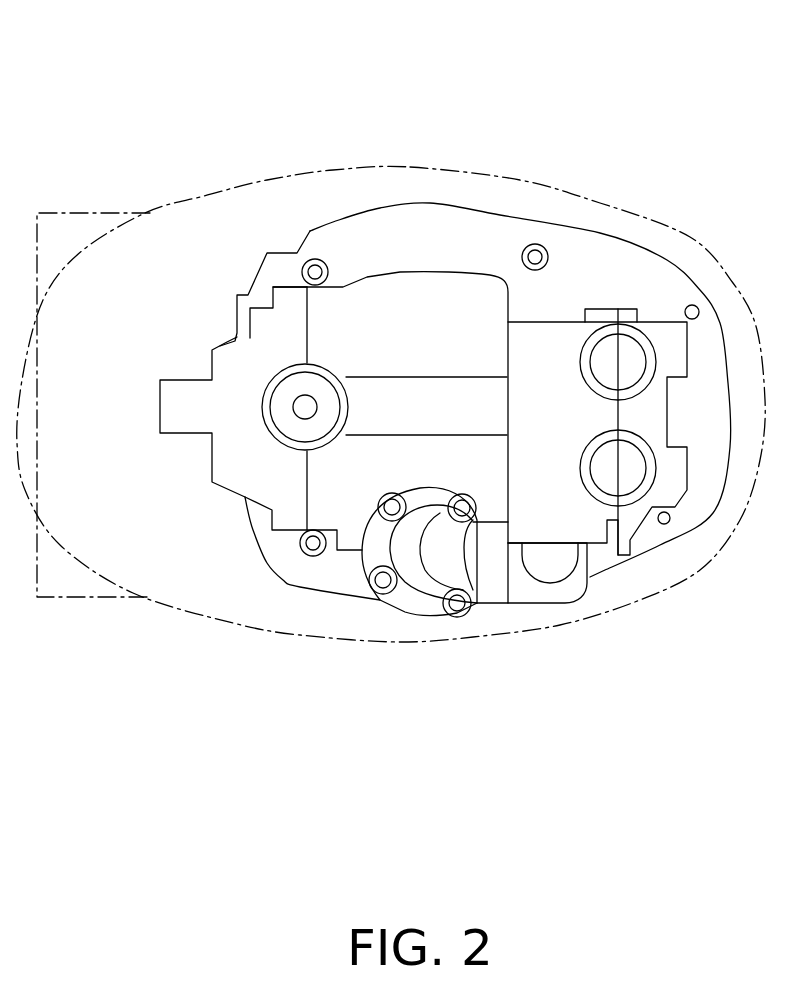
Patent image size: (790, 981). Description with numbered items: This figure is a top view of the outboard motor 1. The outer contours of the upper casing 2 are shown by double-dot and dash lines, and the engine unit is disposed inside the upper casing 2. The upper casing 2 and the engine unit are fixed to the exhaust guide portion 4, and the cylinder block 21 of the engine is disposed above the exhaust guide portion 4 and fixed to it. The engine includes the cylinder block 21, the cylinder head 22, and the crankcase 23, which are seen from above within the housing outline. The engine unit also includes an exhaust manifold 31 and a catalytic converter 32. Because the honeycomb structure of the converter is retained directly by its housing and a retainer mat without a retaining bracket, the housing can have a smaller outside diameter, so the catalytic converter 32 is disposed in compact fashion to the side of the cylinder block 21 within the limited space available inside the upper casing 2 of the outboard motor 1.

The outboard motor 1 is at (200, 110).
The upper casing 2 is at (422, 167).
The exhaust guide portion 4 is at (307, 577).
The cylinder block 21 is at (383, 320).
The cylinder head 22 is at (558, 340).
The crankcase 23 is at (270, 327).
The exhaust manifold 31 is at (543, 617).
The catalytic converter 32 is at (410, 598).